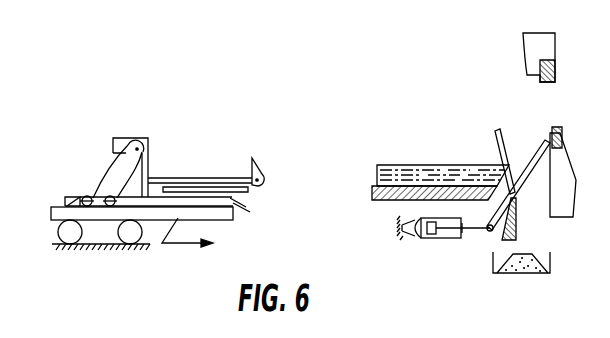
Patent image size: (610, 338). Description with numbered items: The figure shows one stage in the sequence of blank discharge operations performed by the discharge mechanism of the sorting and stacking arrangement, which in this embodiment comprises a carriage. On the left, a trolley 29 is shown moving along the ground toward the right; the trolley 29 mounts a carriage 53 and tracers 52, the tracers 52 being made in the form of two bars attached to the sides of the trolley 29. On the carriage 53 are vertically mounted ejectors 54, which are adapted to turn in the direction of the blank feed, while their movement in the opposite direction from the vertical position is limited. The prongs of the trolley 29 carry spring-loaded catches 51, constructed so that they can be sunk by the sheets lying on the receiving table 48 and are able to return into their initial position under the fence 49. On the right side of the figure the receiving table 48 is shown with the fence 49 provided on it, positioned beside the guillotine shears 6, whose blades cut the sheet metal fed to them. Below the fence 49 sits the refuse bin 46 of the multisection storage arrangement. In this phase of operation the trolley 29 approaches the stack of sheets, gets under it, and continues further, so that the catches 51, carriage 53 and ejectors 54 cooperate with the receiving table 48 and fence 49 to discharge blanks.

The guillotine shears 6 is at (523, 58).
The trolley 29 is at (186, 182).
The refuse bin 46 is at (553, 263).
The receiving table 48 is at (380, 197).
The fence 49 is at (538, 157).
The spring-loaded catches 51 is at (261, 172).
The tracers 52 is at (247, 210).
The carriage 53 is at (112, 167).
The ejectors 54 is at (140, 163).